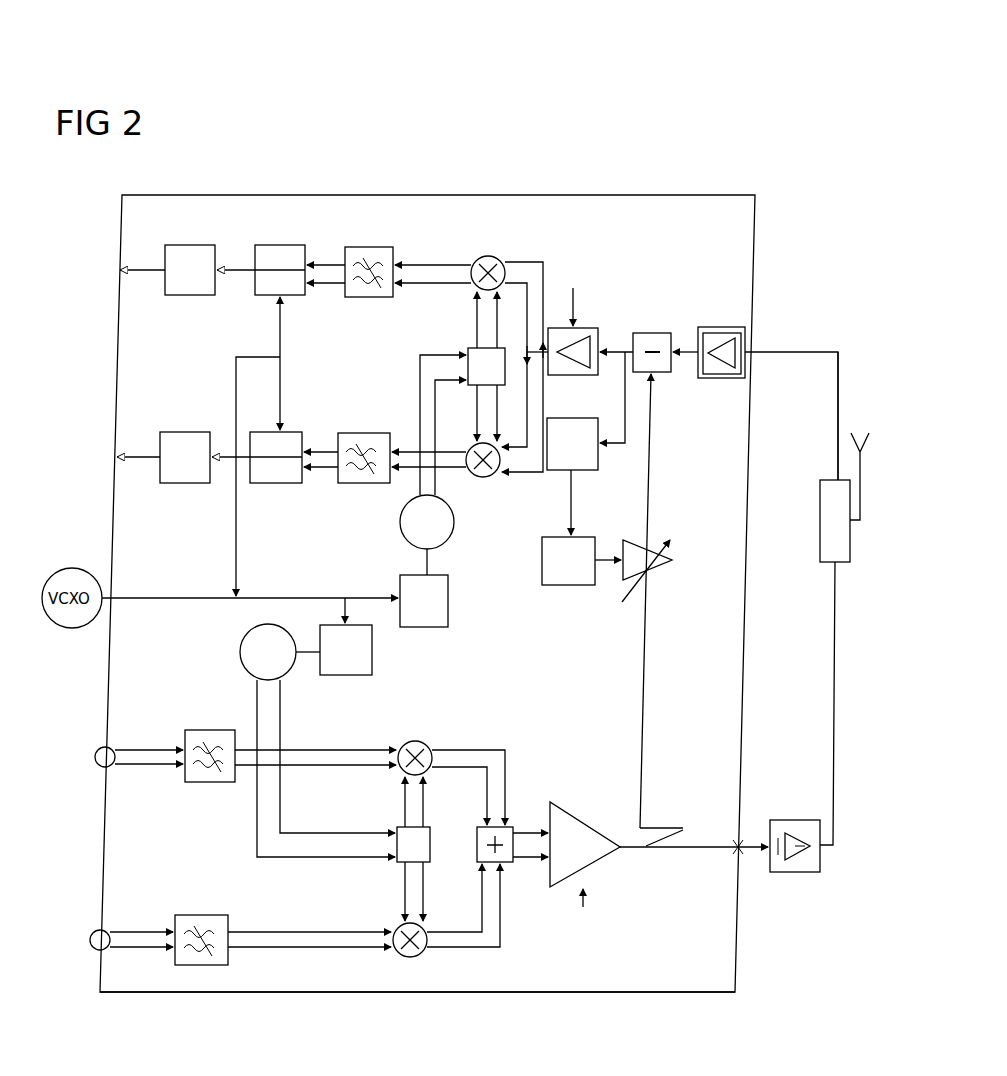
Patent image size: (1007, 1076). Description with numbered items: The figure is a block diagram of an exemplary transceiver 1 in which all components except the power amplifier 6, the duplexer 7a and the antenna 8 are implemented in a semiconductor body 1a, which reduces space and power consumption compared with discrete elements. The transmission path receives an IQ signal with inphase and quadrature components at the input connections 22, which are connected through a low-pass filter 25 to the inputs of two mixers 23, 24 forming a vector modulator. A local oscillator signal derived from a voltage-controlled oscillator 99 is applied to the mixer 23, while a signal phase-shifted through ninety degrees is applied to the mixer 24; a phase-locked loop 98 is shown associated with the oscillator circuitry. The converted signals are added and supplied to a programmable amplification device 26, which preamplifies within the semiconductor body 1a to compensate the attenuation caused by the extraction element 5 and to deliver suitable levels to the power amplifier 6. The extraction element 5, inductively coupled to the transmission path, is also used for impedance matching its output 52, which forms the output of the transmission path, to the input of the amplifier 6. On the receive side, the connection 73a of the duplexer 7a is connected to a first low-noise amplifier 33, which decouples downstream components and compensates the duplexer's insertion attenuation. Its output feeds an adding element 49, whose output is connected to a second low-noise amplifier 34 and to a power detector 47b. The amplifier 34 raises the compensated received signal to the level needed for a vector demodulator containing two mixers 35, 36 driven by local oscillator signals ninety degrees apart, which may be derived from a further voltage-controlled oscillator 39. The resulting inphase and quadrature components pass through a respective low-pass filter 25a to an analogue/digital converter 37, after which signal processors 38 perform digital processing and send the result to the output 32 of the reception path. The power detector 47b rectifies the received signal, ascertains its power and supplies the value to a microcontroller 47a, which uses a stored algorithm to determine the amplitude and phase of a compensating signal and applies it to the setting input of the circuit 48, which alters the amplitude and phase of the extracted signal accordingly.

The transceiver 1 is at (797, 180).
The semiconductor body 1a is at (415, 994).
The extraction element 5 is at (662, 826).
The power amplifier 6 is at (795, 818).
The duplexer 7a is at (820, 522).
The antenna 8 is at (860, 440).
The input connections 22 is at (100, 775).
The mixer 23 is at (418, 740).
The mixer 24 is at (395, 926).
The low-pass filter 25 is at (208, 784).
The low-pass filter 25a is at (368, 298).
The programmable amplification device 26 is at (598, 866).
The output of the reception path 32 is at (125, 272).
The first low-noise amplifier 33 is at (716, 325).
The second low-noise amplifier 34 is at (586, 325).
The mixer 35 is at (498, 258).
The mixer 36 is at (493, 480).
The analogue/digital converter 37 is at (293, 298).
The signal processors 38 is at (188, 298).
The voltage controlled oscillator 39 is at (450, 538).
The microcontroller 47a is at (568, 588).
The power detector 47b is at (590, 472).
The circuit 48 is at (642, 590).
The adding element 49 is at (652, 330).
The output 52 is at (741, 838).
The connection of the duplexer 73a is at (833, 478).
The phase locked loops 98 is at (424, 628).
The voltage-controlled oscillator 99 is at (240, 650).